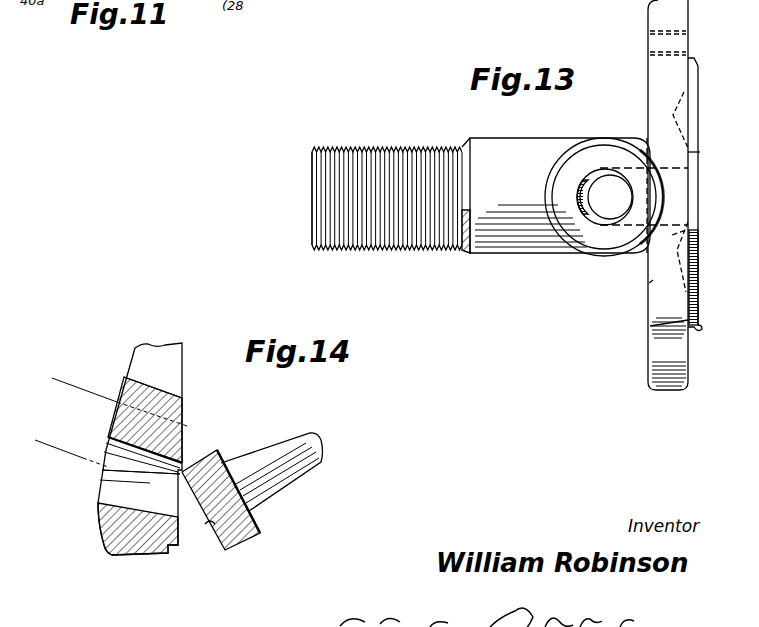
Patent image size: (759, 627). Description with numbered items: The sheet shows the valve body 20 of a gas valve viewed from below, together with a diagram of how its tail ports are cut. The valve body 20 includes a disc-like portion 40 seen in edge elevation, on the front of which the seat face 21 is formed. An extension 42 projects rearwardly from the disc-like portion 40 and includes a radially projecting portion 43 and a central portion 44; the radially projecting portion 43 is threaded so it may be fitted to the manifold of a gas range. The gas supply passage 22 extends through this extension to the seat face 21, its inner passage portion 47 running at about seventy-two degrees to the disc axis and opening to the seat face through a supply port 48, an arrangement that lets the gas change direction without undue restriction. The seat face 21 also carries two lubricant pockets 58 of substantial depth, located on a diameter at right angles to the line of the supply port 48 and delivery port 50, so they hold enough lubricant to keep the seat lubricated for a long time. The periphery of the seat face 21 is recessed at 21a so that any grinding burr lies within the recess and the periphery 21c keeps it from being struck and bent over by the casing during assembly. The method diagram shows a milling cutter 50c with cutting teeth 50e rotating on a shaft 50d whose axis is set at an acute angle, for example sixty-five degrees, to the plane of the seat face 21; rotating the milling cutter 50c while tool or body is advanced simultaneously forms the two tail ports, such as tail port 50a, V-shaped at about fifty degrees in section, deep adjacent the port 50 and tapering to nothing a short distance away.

In FIG. 13, the valve body 20 is at (647, 288).
In FIG. 14, the valve body 20 is at (173, 339).
In FIG. 13, the seat face 21 is at (710, 68).
In FIG. 14, the seat face 21 is at (182, 416).
In FIG. 13, the recessed periphery 21a is at (668, 324).
In FIG. 13, the periphery of seat face 21c is at (688, 332).
In FIG. 13, the gas supply passage 22 is at (588, 215).
In FIG. 13, the disc-like portion 40 is at (648, 70).
In FIG. 13, the extension 42 is at (499, 248).
In FIG. 13, the radially projecting portion 43 is at (585, 148).
In FIG. 13, the central portion 44 is at (505, 138).
In FIG. 13, the inner passage portion 47 is at (676, 238).
In FIG. 14, the supply port 48 is at (170, 390).
In FIG. 14, the delivery port 50 is at (182, 456).
In FIG. 14, the tail port 50a is at (178, 468).
In FIG. 14, the milling cutter 50c is at (249, 515).
In FIG. 14, the shaft 50d is at (282, 440).
In FIG. 14, the cutting teeth 50e is at (205, 526).
In FIG. 13, the lubricant pockets 58 is at (682, 112).